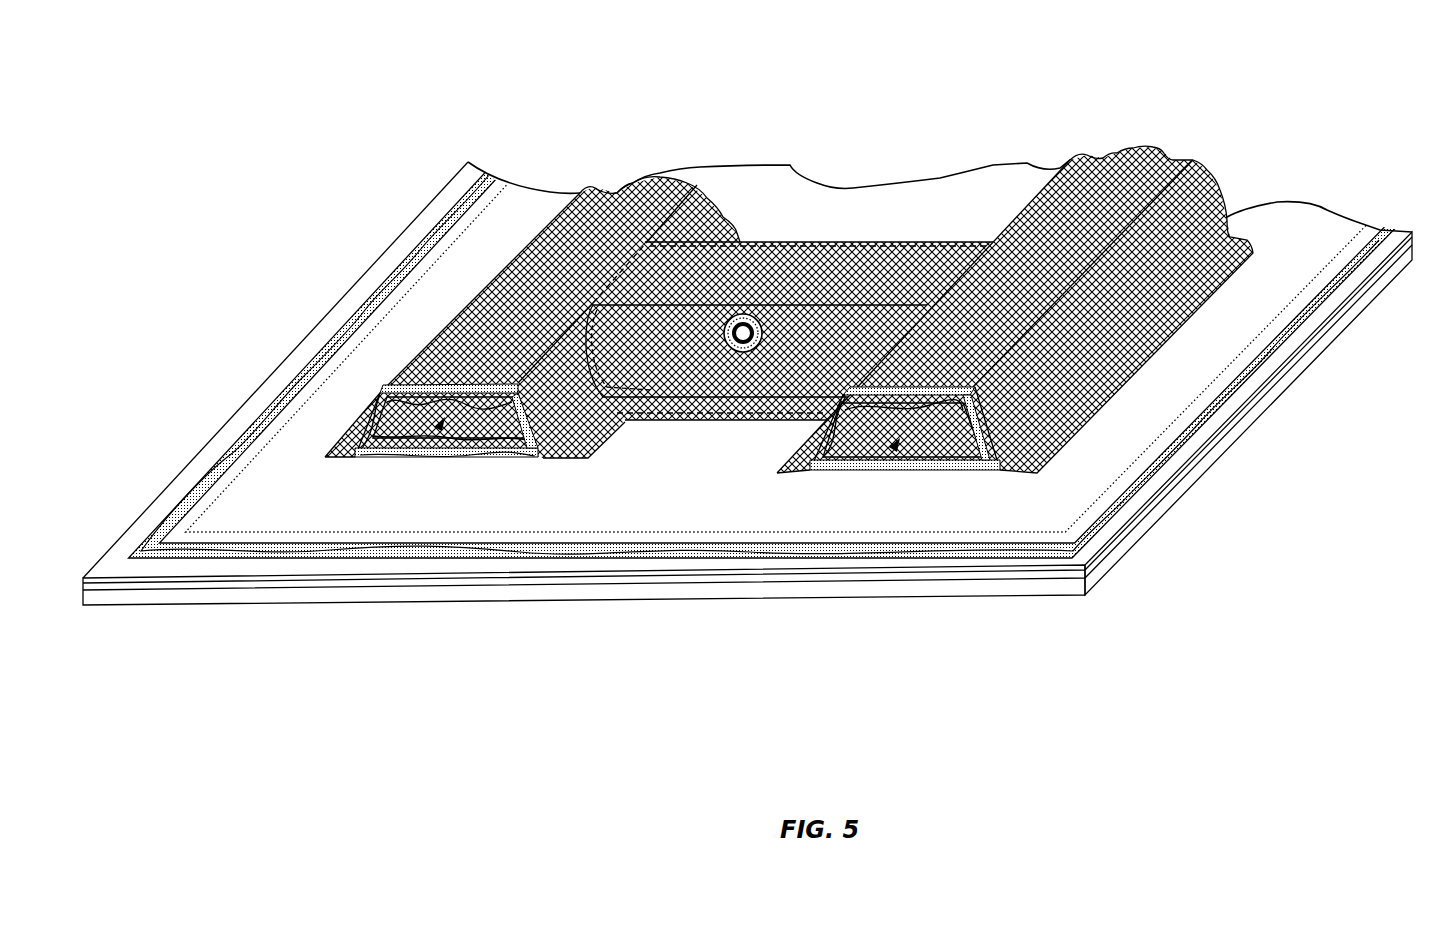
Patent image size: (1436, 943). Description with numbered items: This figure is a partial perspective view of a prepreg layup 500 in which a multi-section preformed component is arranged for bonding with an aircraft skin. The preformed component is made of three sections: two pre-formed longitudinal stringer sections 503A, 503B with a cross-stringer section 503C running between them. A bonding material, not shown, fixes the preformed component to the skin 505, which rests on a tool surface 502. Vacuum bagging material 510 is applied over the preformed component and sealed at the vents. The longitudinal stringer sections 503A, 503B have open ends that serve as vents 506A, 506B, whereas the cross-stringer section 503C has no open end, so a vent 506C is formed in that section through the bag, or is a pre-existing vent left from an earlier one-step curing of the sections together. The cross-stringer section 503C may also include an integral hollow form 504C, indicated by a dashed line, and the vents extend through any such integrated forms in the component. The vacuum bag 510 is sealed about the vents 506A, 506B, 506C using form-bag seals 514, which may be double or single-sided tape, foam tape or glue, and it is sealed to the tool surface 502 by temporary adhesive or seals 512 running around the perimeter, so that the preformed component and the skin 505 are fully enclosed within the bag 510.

The prepreg layup 500 is at (362, 150).
The tool surface 502 is at (1022, 592).
The longitudinal stringer section 503A is at (1133, 150).
The longitudinal stringer section 503B is at (622, 195).
The cross-stringer section 503C is at (838, 242).
The integral hollow form 504C is at (623, 240).
The skin 505 is at (1005, 205).
The vent 506A is at (905, 461).
The vent 506B is at (438, 424).
The vent 506C is at (745, 312).
The vacuum bagging material 510 is at (1305, 312).
The seals 512 is at (1207, 452).
The form-bag seals 514 is at (787, 260).